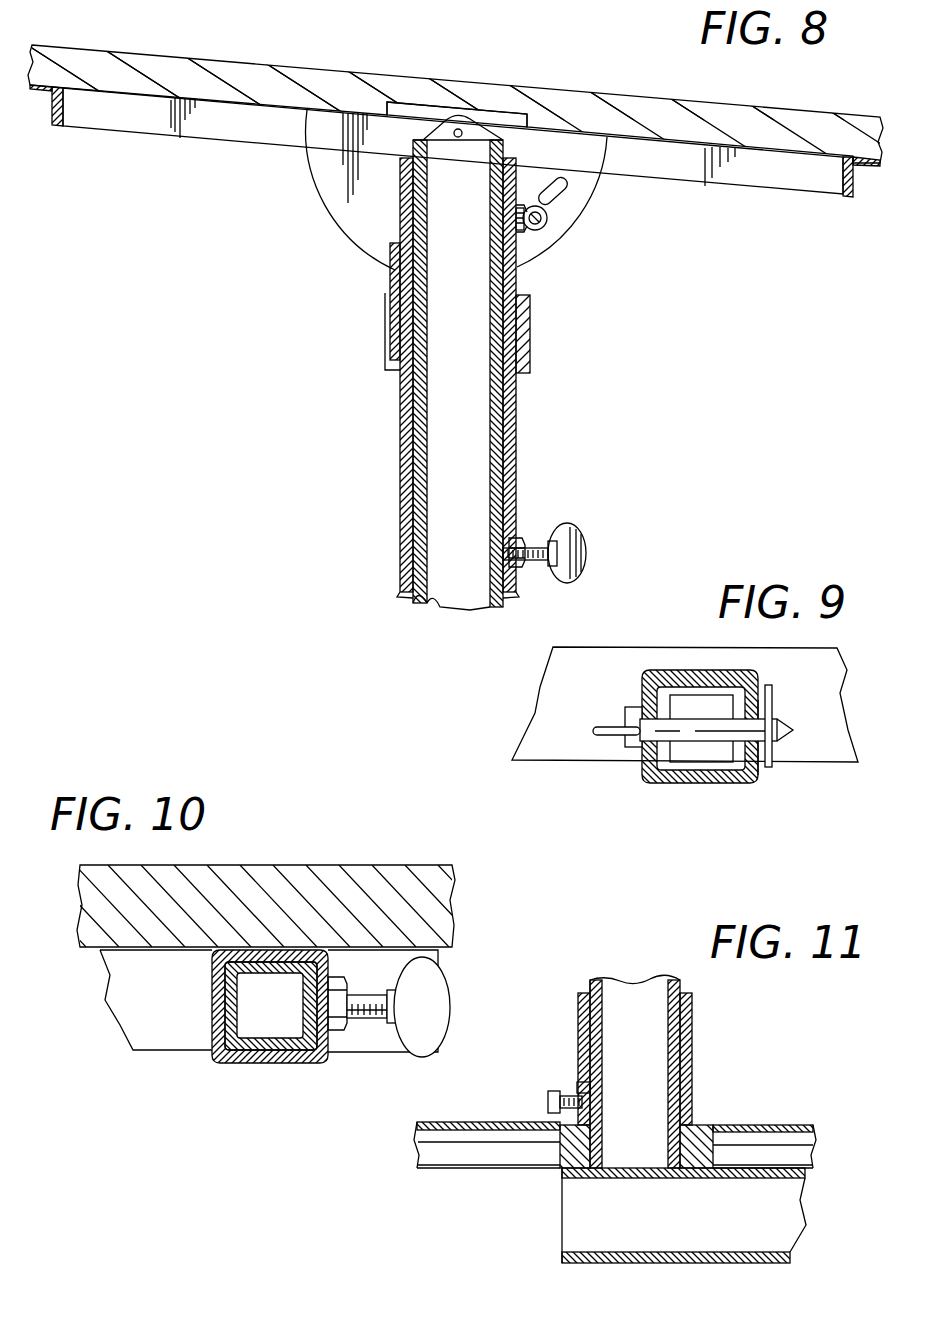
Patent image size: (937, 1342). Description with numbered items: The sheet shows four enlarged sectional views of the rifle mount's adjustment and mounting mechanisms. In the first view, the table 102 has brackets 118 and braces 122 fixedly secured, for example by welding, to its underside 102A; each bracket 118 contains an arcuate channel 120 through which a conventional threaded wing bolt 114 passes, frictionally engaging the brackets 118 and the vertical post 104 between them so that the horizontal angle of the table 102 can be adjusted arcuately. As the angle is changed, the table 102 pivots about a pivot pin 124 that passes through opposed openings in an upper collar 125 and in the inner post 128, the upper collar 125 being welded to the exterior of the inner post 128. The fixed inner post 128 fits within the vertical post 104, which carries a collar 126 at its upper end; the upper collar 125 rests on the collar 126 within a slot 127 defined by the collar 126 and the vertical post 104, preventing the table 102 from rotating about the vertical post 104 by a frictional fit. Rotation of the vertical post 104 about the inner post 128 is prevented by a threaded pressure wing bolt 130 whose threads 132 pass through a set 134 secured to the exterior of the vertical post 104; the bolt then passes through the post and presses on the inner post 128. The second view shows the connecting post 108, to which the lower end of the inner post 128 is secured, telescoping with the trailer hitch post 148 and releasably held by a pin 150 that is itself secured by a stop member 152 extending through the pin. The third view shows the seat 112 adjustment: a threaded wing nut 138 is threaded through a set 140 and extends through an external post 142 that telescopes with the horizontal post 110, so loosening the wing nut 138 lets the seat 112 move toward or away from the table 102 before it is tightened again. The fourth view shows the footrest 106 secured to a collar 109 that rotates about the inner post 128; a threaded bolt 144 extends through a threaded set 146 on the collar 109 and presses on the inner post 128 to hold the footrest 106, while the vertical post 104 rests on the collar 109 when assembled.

In FIG. 8, the table 102 is at (131, 58).
In FIG. 8, the underside of table 102A is at (770, 153).
In FIG. 8, the vertical post 104 is at (400, 515).
In FIG. 11, the vertical post 104 is at (687, 1038).
In FIG. 11, the footrest 106 is at (763, 1138).
In FIG. 9, the connecting post 108 is at (682, 758).
In FIG. 11, the connecting post 108 is at (722, 1262).
In FIG. 11, the collar 109 is at (690, 1098).
In FIG. 10, the horizontal post 110 is at (250, 1045).
In FIG. 10, the seat 112 is at (300, 873).
In FIG. 8, the threaded wing bolt 114 is at (550, 232).
In FIG. 8, the brackets 118 is at (322, 193).
In FIG. 8, the arcuate channel 120 is at (567, 186).
In FIG. 8, the braces 122 is at (57, 127).
In FIG. 8, the pivot pin 124 is at (461, 129).
In FIG. 8, the upper collar 125 is at (510, 267).
In FIG. 8, the collar 126 is at (532, 350).
In FIG. 8, the slot 127 is at (387, 295).
In FIG. 8, the inner post 128 is at (434, 603).
In FIG. 11, the inner post 128 is at (598, 988).
In FIG. 8, the threaded pressure wing bolt 130 is at (583, 527).
In FIG. 8, the threads 132 is at (540, 538).
In FIG. 8, the set 134 is at (522, 568).
In FIG. 10, the threaded wing nut 138 is at (423, 988).
In FIG. 10, the threaded set 140 is at (345, 1025).
In FIG. 10, the external post 142 is at (213, 1063).
In FIG. 11, the threaded bolt 144 is at (548, 1103).
In FIG. 11, the threaded set 146 is at (573, 1092).
In FIG. 9, the trailer hitch post 148 is at (753, 784).
In FIG. 9, the pin 150 is at (633, 708).
In FIG. 9, the stop member 152 is at (793, 697).